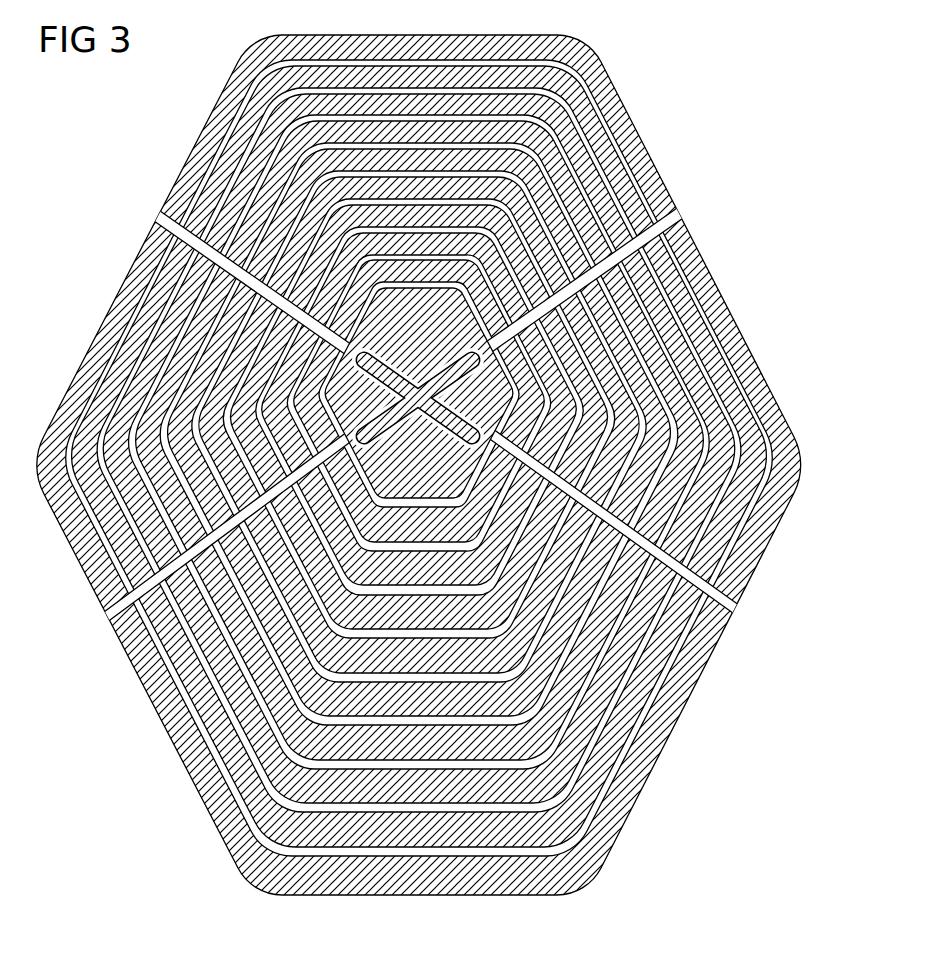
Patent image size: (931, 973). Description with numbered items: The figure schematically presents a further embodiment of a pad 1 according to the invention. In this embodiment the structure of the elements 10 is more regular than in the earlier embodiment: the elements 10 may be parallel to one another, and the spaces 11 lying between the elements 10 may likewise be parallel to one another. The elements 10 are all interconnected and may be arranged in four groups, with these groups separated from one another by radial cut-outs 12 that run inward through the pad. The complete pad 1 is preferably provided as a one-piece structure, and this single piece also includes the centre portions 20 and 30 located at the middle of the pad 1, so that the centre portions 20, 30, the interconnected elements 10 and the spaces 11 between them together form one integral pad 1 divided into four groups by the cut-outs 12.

The pad 1 is at (655, 104).
The elements 10 is at (472, 893).
The spaces 11 is at (385, 853).
The radial cut-outs 12 is at (166, 212).
The centre portion 20 is at (436, 477).
The centre portion 30 is at (418, 374).